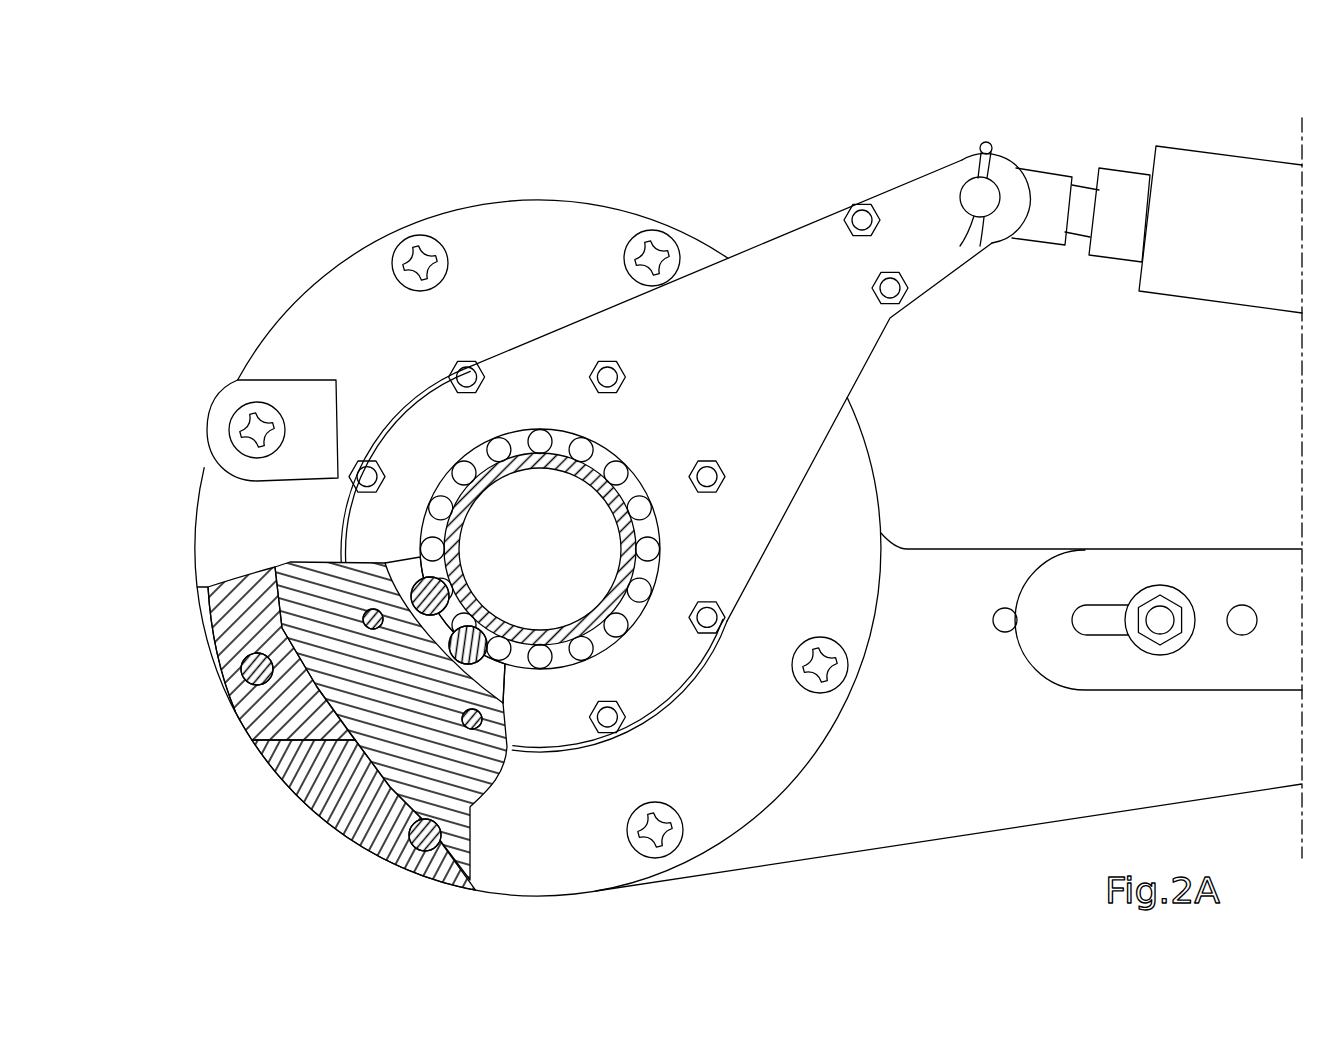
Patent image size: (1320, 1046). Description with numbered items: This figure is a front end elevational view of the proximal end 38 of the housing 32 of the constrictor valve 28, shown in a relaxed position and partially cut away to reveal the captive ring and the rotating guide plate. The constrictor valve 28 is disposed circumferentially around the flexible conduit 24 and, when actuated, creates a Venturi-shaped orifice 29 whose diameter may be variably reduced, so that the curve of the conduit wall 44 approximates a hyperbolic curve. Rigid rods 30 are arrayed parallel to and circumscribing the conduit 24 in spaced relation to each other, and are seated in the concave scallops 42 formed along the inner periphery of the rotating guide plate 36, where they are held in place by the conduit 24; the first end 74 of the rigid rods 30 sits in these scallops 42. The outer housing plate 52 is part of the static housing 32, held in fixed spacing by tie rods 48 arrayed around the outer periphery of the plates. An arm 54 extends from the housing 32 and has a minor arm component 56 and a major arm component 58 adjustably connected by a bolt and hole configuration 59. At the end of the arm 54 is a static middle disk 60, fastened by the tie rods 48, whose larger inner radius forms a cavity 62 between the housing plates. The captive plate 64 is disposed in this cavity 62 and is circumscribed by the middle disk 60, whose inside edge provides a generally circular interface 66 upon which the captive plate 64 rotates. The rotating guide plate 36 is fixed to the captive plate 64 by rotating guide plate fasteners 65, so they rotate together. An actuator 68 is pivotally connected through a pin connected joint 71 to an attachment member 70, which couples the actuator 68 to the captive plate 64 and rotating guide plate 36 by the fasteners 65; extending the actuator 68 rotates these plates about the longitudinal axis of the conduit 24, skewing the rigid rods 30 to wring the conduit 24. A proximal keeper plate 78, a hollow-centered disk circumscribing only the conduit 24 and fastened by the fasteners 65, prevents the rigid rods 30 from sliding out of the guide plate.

The flexible conduit 24 is at (527, 460).
The constrictor valve 28 is at (179, 154).
The Venturi-shaped orifice 29 is at (604, 522).
The rigid rods 30 is at (476, 640).
The housing 32 is at (298, 192).
The rotating guide plate 36 is at (325, 675).
The proximal end 38 is at (236, 334).
The scallops 42 is at (374, 765).
The conduit wall 44 is at (468, 497).
The tie rods 48 is at (240, 705).
The outer housing plate 52 is at (517, 222).
The arm 54 is at (985, 805).
The minor arm component 56 is at (1062, 575).
The major arm component 58 is at (1258, 772).
The bolt and hole configuration 59 is at (1162, 612).
The middle disk 60 is at (347, 790).
The cavity 62 is at (268, 622).
The captive plate 64 is at (330, 705).
The rotating guide plate fasteners 65 is at (728, 640).
The circular interface 66 is at (210, 586).
The actuator 68 is at (1180, 165).
The attachment member 70 is at (807, 237).
The pin connected joint 71 is at (973, 197).
The first end 74 is at (535, 663).
The proximal keeper plate 78 is at (430, 407).